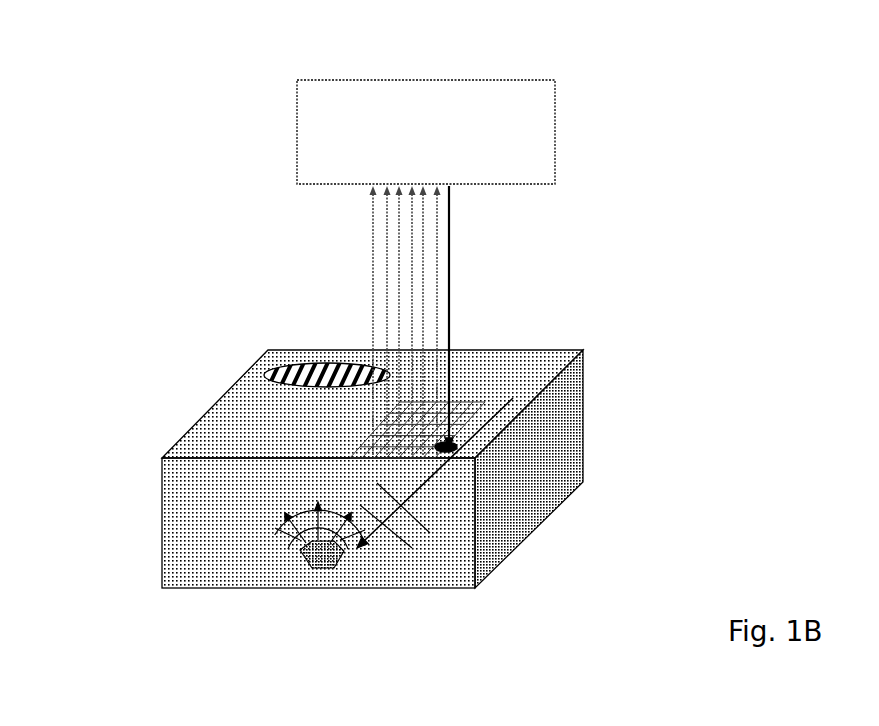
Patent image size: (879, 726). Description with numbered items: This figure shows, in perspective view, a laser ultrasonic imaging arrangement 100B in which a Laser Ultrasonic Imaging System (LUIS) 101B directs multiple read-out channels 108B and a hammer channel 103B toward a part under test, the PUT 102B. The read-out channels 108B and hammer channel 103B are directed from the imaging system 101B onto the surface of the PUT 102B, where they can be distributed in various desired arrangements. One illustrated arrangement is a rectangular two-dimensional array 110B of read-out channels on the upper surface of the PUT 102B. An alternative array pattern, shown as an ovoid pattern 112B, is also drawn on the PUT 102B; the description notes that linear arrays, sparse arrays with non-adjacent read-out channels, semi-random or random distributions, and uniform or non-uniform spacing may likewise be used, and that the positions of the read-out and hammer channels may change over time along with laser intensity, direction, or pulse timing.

The laser ultrasonic imaging arrangement 100B is at (656, 77).
The Laser Ultrasonic Imaging System 101B is at (426, 132).
The PUT 102B is at (149, 517).
The hammer channel 103B is at (462, 249).
The read-out channel 108B is at (351, 247).
The rectangular two-dimensional array 110B is at (504, 389).
The ovoid pattern 112B is at (283, 355).